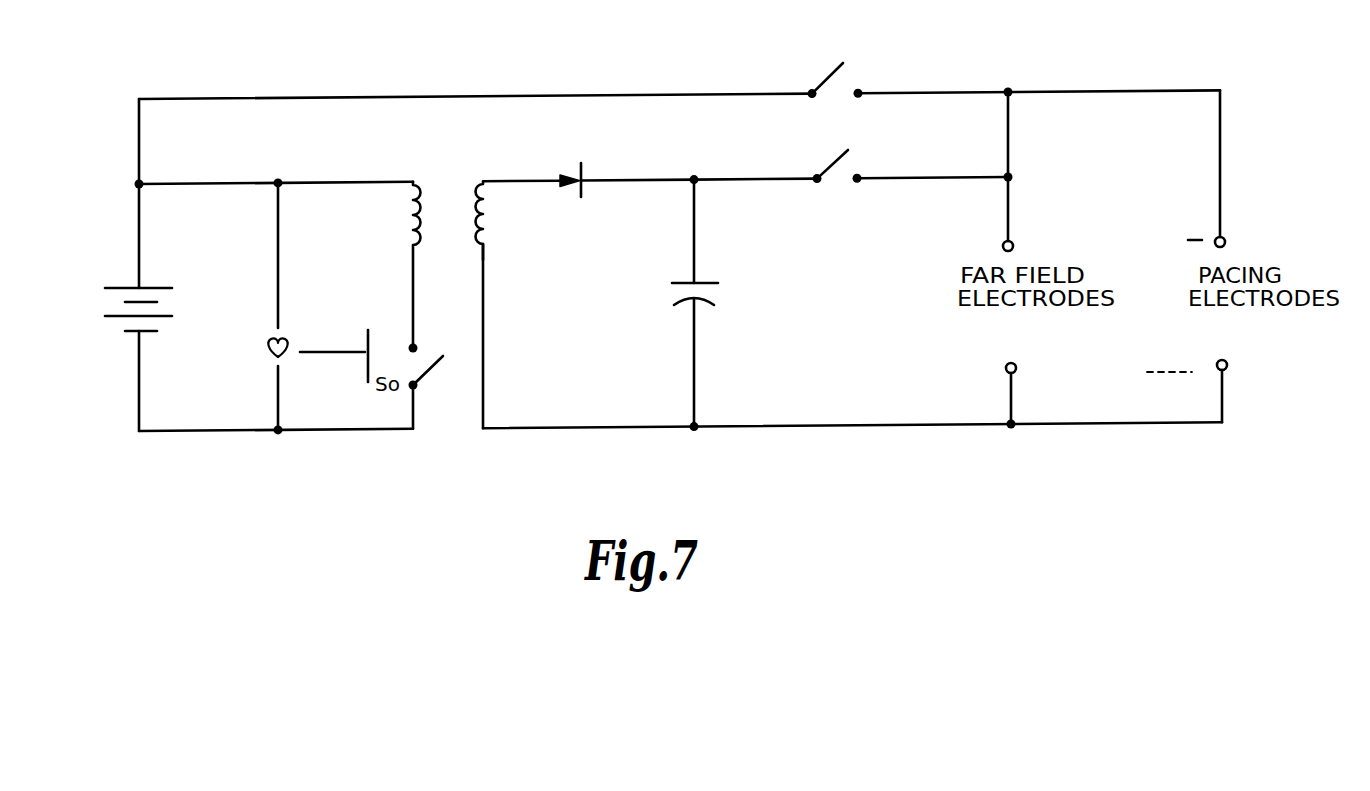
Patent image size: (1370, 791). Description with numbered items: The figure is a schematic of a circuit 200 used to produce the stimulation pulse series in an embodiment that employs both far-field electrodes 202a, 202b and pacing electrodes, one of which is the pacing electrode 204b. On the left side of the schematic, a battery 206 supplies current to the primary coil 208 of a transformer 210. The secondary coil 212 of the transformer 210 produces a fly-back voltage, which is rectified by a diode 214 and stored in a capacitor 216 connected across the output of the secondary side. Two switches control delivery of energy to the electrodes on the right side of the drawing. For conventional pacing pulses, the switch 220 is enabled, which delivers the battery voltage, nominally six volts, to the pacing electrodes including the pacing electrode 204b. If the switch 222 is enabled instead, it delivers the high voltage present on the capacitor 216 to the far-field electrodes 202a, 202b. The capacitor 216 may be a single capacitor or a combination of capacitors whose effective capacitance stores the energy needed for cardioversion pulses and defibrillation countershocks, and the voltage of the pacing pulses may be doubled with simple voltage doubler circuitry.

The circuit 200 is at (878, 446).
The far-field electrode 202a is at (1016, 367).
The far-field electrode 202b is at (1014, 246).
The pacing electrode 204b is at (1226, 242).
The battery 206 is at (137, 334).
The primary coil 208 is at (365, 205).
The transformer 210 is at (452, 193).
The secondary coil 212 is at (488, 244).
The diode 214 is at (582, 198).
The capacitor 216 is at (695, 327).
The switch 220 is at (860, 92).
The switch 222 is at (860, 177).